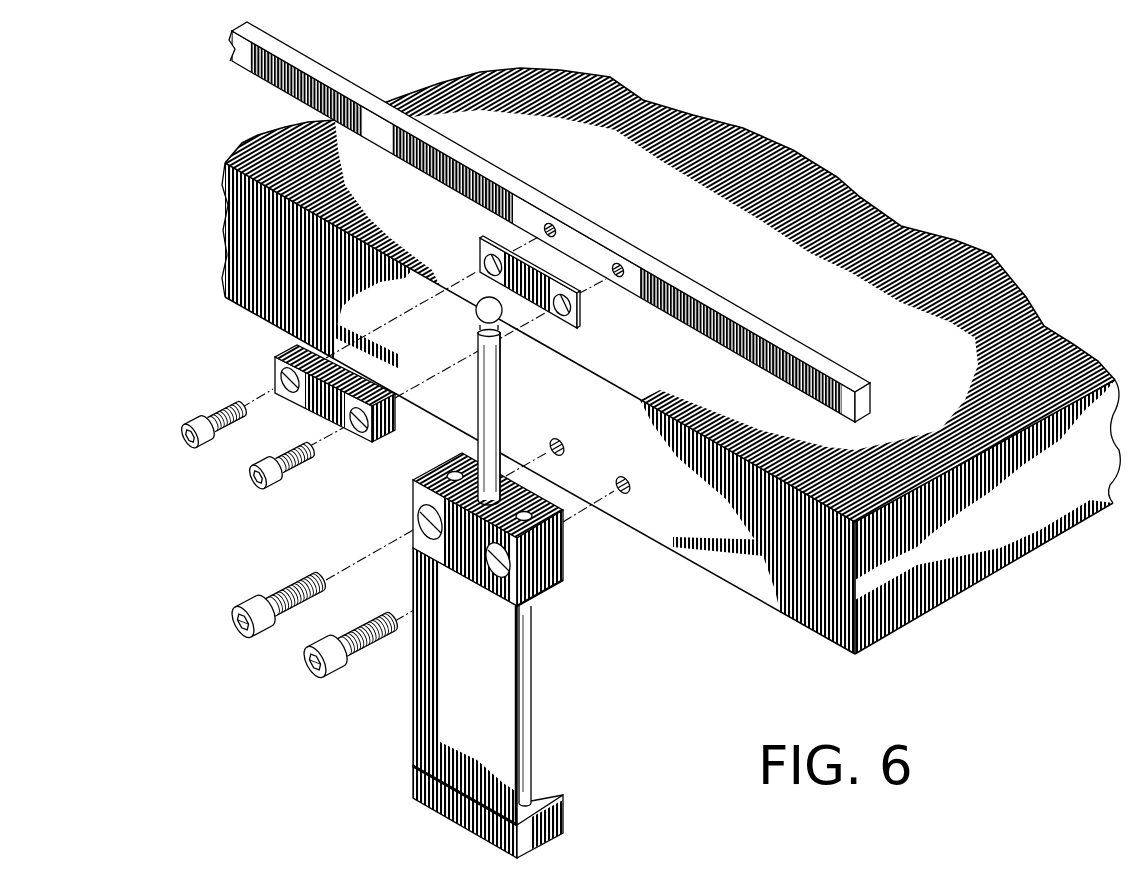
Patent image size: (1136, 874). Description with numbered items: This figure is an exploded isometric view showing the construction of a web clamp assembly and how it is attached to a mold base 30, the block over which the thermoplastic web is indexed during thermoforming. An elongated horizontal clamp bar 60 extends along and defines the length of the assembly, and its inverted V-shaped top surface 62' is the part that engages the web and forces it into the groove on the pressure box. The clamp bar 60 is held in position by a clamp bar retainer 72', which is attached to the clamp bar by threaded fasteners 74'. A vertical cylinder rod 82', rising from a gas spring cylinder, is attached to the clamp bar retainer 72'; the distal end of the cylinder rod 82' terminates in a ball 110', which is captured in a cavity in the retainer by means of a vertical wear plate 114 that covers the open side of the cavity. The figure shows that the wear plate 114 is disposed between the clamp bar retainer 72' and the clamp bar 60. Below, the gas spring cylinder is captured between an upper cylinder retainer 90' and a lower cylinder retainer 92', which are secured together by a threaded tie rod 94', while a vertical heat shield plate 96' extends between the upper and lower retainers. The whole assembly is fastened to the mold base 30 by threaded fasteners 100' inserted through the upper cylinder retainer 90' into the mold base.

The mold base 30 is at (990, 515).
The clamp bar 60 is at (837, 390).
The inverted V-shaped top surface 62' is at (577, 222).
The wear plate 114 is at (542, 288).
The ball 110' is at (458, 325).
The cylinder rod 82' is at (486, 401).
The clamp bar retainer 72' is at (297, 388).
The threaded fasteners 74' is at (242, 453).
The upper cylinder retainer 90' is at (518, 533).
The threaded fasteners 100' is at (315, 634).
The heat shield plate 96' is at (434, 686).
The tie rod 94' is at (556, 706).
The lower cylinder retainer 92' is at (469, 812).